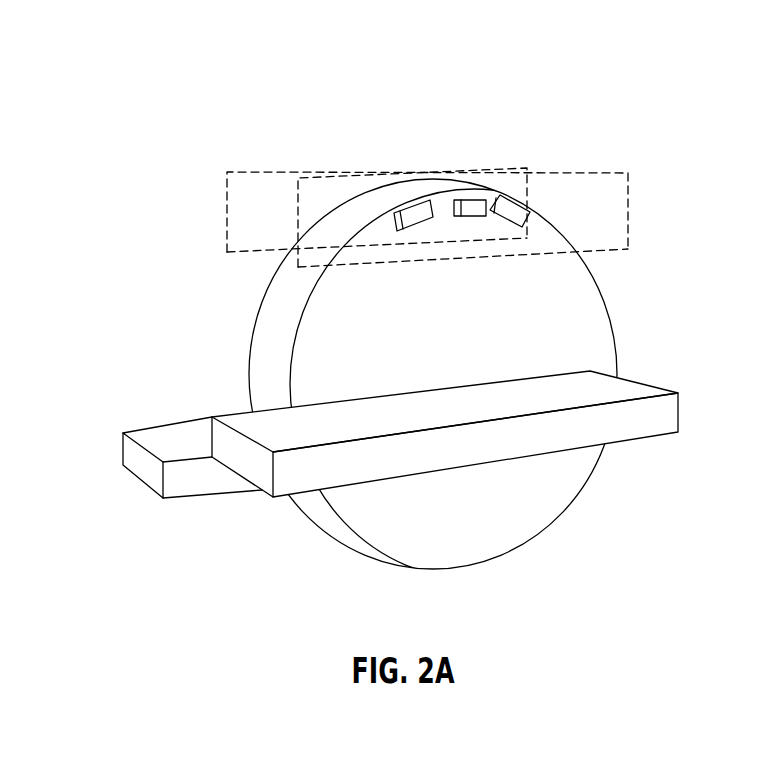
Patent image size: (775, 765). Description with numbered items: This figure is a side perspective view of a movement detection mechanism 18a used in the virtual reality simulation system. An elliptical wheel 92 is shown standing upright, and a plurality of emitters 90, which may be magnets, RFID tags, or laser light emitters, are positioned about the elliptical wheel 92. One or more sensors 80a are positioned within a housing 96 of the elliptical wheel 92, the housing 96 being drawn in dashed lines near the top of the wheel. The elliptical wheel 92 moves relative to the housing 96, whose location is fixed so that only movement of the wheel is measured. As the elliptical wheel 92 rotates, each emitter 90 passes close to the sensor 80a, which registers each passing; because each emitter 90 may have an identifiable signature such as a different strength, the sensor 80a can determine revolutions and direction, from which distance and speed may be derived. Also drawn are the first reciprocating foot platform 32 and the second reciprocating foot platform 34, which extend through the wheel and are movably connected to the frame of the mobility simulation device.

The movement detection mechanism 18a is at (697, 130).
The first reciprocating foot platform 32 is at (632, 426).
The second reciprocating foot platform 34 is at (193, 476).
The sensor 80a is at (472, 210).
The emitter 90 is at (400, 207).
The elliptical wheel 92 is at (264, 328).
The housing 96 is at (226, 192).